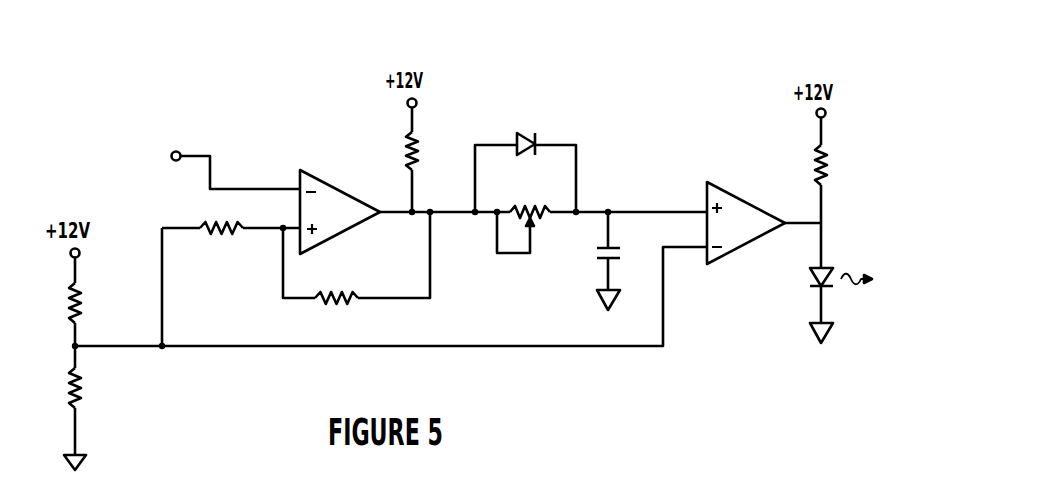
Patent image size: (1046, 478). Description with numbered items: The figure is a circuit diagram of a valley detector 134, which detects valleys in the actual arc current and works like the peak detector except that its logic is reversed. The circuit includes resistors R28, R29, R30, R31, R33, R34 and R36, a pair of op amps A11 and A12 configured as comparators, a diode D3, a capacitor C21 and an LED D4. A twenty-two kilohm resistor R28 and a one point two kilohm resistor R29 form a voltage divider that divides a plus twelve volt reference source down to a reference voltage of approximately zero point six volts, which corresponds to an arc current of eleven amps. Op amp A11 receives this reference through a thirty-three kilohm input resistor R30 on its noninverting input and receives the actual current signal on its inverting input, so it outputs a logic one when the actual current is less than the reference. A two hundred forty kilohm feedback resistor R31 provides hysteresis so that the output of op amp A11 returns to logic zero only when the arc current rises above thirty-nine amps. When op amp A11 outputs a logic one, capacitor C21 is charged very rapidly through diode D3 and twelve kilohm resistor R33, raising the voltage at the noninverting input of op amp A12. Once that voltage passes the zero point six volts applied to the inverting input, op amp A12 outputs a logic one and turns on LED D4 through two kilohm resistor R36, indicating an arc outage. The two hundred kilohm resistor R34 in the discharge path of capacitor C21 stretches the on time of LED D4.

The valley detector 134 is at (544, 143).
The resistor R28 is at (82, 307).
The resistor R29 is at (82, 392).
The input resistor R30 is at (212, 223).
The feedback resistor R31 is at (328, 293).
The resistor R33 is at (418, 158).
The resistor R34 is at (534, 203).
The resistor R36 is at (824, 172).
The op amp A11 is at (330, 183).
The op amp A12 is at (735, 195).
The diode D3 is at (536, 139).
The LED D4 is at (812, 284).
The capacitor C21 is at (614, 258).